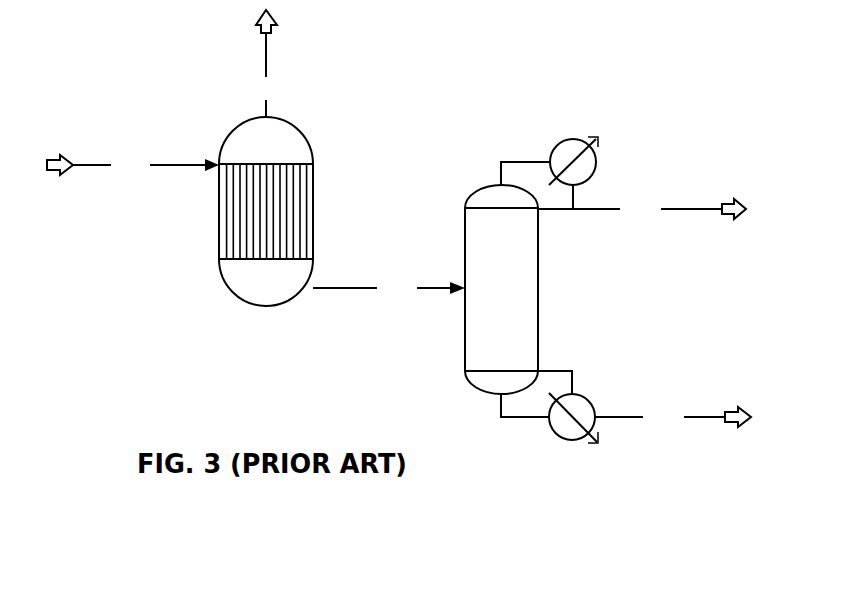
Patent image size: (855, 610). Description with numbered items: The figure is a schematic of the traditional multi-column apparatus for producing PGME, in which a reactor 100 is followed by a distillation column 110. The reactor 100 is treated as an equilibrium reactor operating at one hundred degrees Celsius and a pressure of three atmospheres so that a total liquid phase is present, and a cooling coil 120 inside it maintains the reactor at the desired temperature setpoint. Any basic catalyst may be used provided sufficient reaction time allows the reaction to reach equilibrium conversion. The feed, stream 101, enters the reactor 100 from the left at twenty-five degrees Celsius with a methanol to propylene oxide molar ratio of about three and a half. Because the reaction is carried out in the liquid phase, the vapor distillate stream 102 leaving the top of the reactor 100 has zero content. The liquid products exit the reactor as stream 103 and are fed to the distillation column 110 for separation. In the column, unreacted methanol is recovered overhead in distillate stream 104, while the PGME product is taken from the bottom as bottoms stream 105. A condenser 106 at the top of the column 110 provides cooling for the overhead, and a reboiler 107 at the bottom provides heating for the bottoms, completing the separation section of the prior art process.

The reactor 100 is at (266, 211).
The cooling coil 120 is at (244, 226).
The feed stream 101 is at (133, 166).
The distillate stream 102 is at (266, 63).
The liquid product stream 103 is at (389, 290).
The distillation column 110 is at (501, 289).
The distillate stream 104 is at (623, 191).
The bottoms stream 105 is at (626, 399).
The condenser 106 is at (617, 138).
The reboiler 107 is at (598, 458).